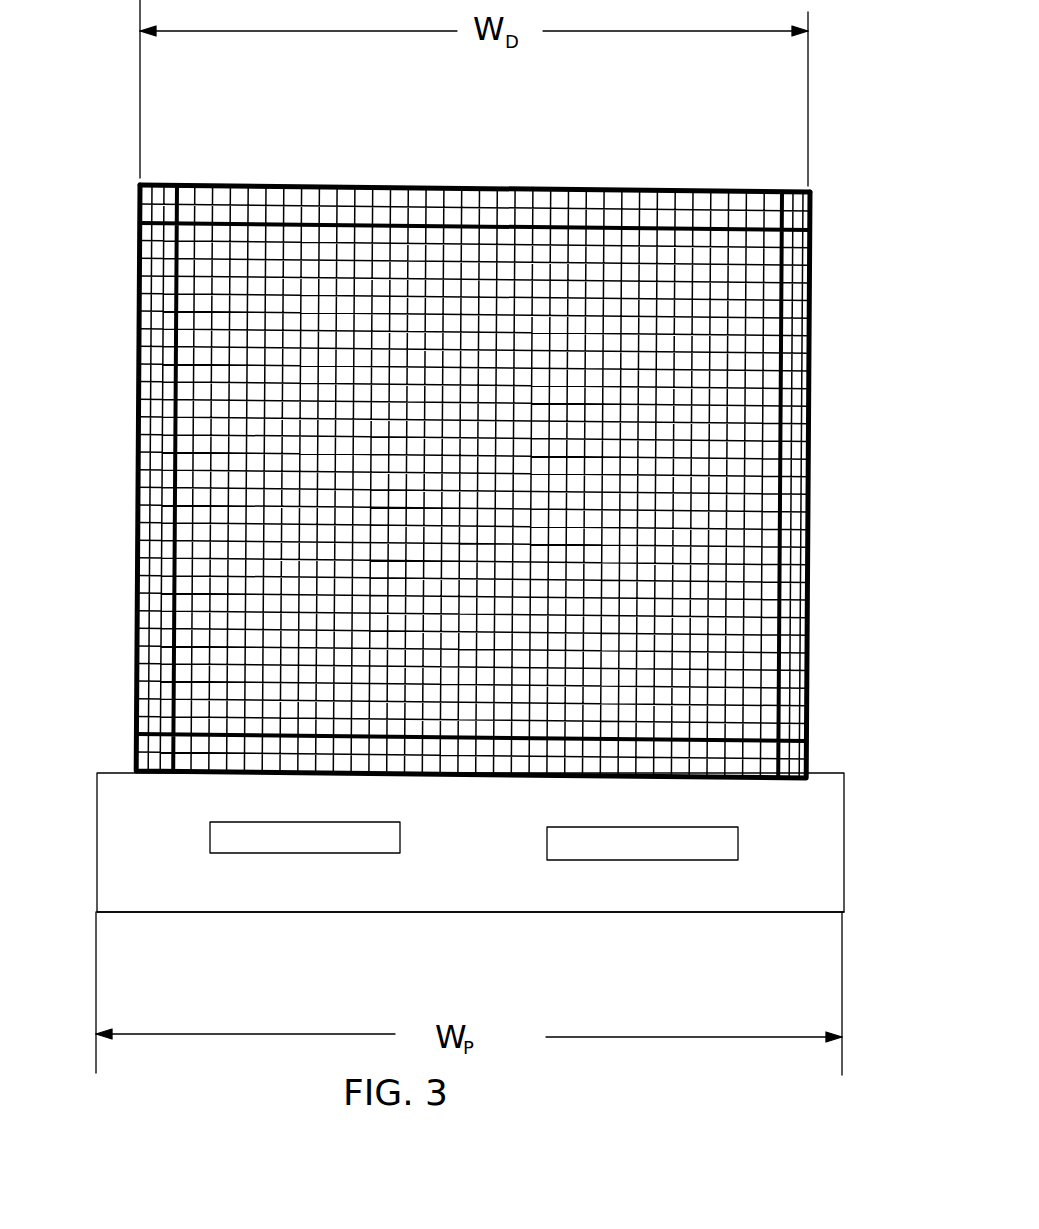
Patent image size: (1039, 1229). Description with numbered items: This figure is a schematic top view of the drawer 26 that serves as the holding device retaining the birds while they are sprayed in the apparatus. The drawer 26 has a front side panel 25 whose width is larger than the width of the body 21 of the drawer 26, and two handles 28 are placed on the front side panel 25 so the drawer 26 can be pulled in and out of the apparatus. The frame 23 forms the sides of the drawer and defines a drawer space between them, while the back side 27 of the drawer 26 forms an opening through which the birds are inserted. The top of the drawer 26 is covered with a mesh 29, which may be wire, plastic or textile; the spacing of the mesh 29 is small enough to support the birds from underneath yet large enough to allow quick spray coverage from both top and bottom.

The body 21 is at (462, 426).
The frame 23 is at (716, 190).
The front side panel 25 is at (470, 896).
The drawer 26 is at (575, 917).
The back side 27 is at (500, 190).
The handles 28 is at (386, 855).
The mesh 29 is at (190, 635).